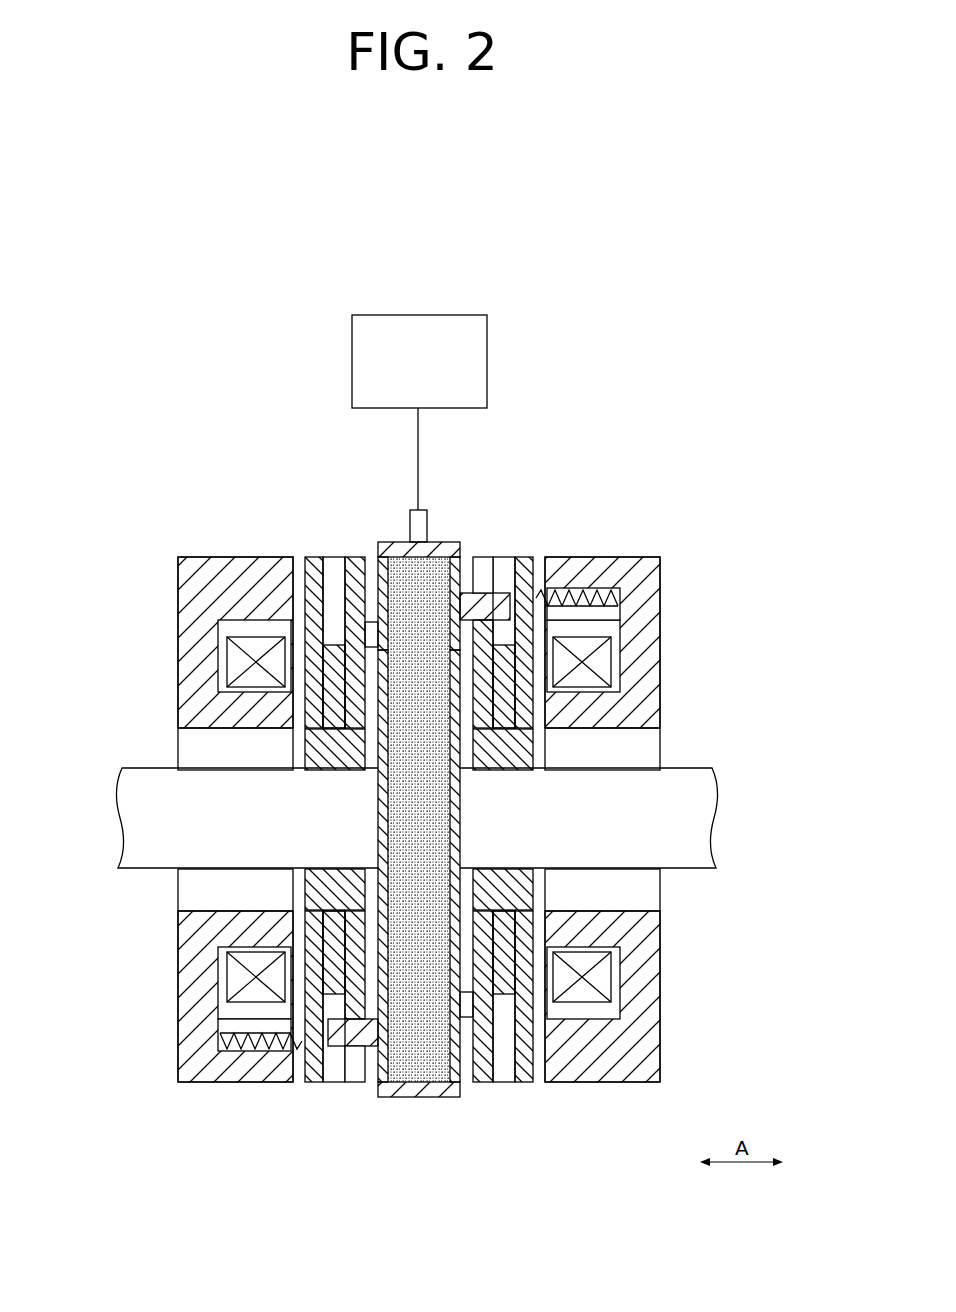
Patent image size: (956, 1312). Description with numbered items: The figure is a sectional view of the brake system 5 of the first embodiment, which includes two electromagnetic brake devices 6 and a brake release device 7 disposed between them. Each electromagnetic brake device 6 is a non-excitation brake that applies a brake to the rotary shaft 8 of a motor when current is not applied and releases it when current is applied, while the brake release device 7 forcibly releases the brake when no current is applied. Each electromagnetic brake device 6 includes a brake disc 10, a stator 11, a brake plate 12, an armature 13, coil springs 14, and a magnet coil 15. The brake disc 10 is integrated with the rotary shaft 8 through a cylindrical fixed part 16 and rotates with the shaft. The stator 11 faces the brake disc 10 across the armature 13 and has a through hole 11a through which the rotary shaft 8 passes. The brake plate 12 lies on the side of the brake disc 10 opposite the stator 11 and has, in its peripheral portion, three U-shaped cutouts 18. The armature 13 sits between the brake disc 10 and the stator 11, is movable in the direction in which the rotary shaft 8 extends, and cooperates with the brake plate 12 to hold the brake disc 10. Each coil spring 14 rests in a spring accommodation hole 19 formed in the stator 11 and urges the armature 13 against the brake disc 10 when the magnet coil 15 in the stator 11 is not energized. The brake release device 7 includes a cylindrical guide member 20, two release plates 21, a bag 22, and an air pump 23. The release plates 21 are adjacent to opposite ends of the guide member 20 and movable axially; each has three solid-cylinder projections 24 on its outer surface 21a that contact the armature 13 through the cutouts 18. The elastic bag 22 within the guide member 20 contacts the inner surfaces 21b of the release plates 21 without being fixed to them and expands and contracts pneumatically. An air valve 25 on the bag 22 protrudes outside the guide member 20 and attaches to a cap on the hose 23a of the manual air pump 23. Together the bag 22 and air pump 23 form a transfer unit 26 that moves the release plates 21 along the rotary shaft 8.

The brake system 5 is at (642, 362).
The electromagnetic brake device 6 is at (181, 545).
The brake release device 7 is at (336, 298).
The rotary shaft 8 is at (130, 822).
The brake disc 10 is at (333, 620).
The stator 11 is at (205, 592).
The through hole 11a is at (215, 900).
The brake plate 12 is at (360, 600).
The armature 13 is at (297, 565).
The coil spring 14 is at (567, 590).
The magnet coil 15 is at (245, 660).
The fixed part 16 is at (300, 750).
The cutout 18 is at (483, 590).
The spring accommodation hole 19 is at (610, 590).
The guide member 20 is at (412, 1098).
The release plate 21 is at (383, 1095).
The outer surface 21a is at (384, 580).
The inner surface 21b is at (400, 1098).
The bag 22 is at (430, 585).
The air pump 23 is at (487, 360).
The hose 23a is at (417, 440).
The projection 24 is at (503, 596).
The air valve 25 is at (421, 525).
The transfer unit 26 is at (348, 367).